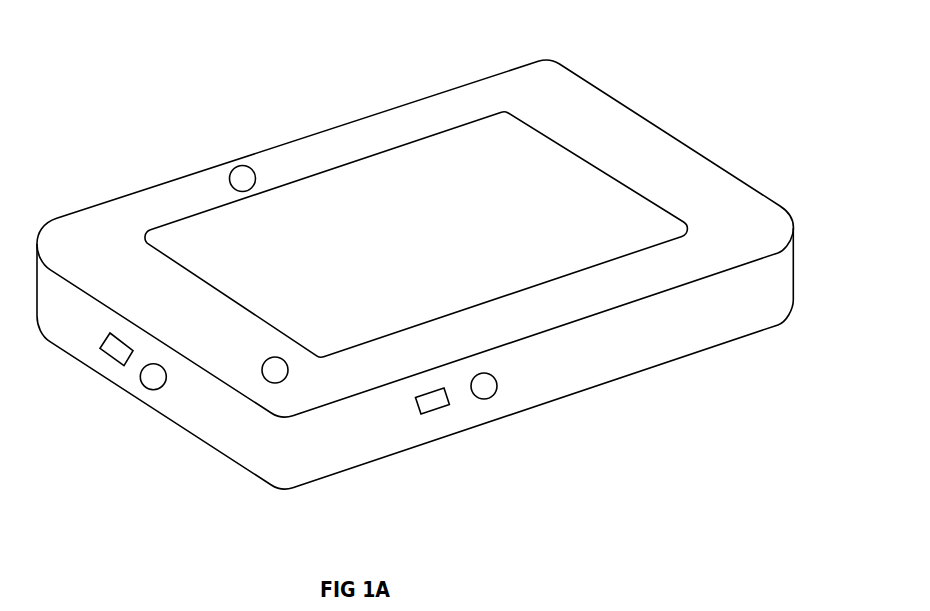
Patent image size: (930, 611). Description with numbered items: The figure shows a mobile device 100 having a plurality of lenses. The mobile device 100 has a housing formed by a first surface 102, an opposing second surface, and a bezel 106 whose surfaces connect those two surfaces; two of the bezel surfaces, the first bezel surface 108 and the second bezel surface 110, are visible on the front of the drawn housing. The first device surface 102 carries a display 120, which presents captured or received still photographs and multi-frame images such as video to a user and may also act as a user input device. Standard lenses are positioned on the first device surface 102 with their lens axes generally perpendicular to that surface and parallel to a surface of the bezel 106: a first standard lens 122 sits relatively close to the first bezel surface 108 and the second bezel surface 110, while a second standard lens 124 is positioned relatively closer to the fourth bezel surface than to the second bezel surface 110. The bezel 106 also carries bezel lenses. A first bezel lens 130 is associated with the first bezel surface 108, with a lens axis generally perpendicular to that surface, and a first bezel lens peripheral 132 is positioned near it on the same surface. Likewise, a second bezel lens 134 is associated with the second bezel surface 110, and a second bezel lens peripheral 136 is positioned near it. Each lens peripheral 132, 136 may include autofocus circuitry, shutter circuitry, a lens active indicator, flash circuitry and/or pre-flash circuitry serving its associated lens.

The mobile device 100 is at (160, 57).
The first surface 102 is at (643, 153).
The bezel 106 is at (804, 292).
The first bezel surface 108 is at (198, 417).
The second bezel surface 110 is at (574, 367).
The display 120 is at (416, 253).
The first standard lens 122 is at (287, 377).
The second standard lens 124 is at (240, 170).
The first bezel lens 130 is at (143, 381).
The first bezel lens peripheral 132 is at (99, 352).
The second bezel lens 134 is at (496, 389).
The second bezel lens peripheral 136 is at (408, 394).